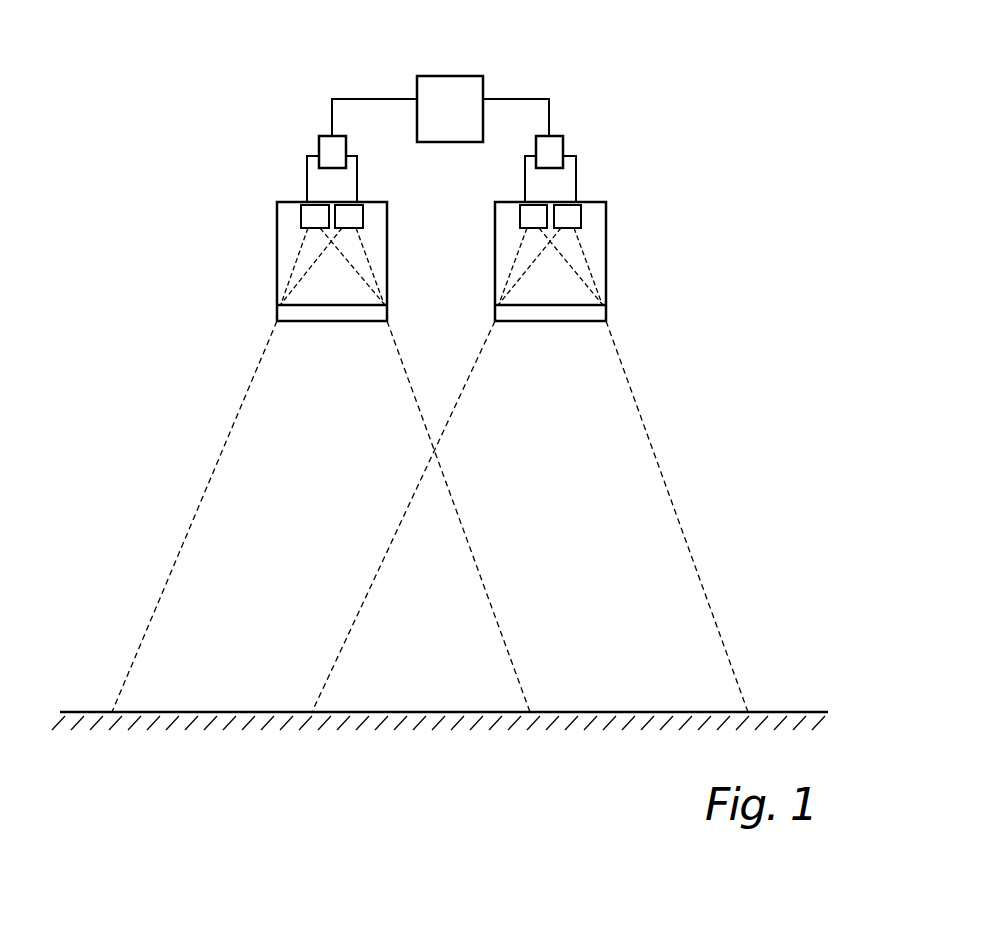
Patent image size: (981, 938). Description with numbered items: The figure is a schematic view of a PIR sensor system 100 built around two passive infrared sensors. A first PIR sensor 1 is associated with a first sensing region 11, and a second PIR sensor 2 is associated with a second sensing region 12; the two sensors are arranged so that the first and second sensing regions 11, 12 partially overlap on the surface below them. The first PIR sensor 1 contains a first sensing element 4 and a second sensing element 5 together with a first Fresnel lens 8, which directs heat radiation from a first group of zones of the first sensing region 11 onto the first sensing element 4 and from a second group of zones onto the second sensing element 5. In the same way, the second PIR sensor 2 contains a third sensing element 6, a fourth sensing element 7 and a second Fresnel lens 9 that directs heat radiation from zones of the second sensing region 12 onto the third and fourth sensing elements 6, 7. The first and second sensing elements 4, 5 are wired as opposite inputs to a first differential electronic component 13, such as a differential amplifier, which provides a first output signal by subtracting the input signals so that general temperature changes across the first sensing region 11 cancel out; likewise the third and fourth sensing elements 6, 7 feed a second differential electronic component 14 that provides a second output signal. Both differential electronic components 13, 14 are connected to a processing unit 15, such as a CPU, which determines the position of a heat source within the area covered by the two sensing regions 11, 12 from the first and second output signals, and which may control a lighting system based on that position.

The PIR sensor system 100 is at (680, 117).
The first PIR sensor 1 is at (325, 245).
The second PIR sensor 2 is at (561, 245).
The first sensing element 4 is at (301, 212).
The second sensing element 5 is at (363, 216).
The third sensing element 6 is at (520, 214).
The fourth sensing element 7 is at (581, 216).
The first Fresnel lens 8 is at (283, 312).
The second Fresnel lens 9 is at (600, 312).
The first sensing region 11 is at (181, 548).
The second sensing region 12 is at (678, 517).
The first differential electronic component 13 is at (324, 150).
The second differential electronic component 14 is at (555, 148).
The processing unit 15 is at (447, 76).